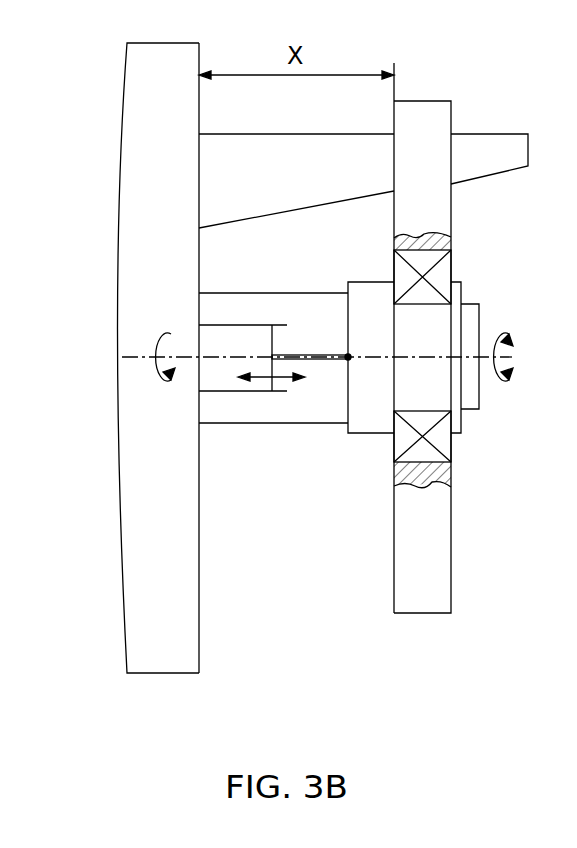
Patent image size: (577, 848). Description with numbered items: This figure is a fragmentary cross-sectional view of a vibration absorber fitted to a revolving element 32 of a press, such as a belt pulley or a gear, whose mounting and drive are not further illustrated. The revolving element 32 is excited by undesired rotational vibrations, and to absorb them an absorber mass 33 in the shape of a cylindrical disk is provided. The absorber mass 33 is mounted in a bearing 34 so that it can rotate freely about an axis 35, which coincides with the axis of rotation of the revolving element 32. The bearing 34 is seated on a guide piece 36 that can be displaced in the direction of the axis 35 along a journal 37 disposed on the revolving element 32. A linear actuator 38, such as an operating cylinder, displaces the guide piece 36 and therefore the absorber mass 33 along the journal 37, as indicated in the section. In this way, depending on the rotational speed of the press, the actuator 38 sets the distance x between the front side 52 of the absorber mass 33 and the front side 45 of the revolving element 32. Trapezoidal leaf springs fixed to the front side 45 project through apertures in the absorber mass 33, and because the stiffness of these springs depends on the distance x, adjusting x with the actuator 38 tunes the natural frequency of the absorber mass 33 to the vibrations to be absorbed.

The revolving element 32 is at (145, 643).
The absorber mass 33 is at (425, 588).
The bearing 34 is at (438, 277).
The axis 35 is at (133, 358).
The guide piece 36 is at (371, 411).
The journal 37 is at (285, 412).
The linear actuator 38 is at (240, 342).
The front side of the element 45 is at (199, 630).
The front side of the absorber mass 52 is at (394, 567).